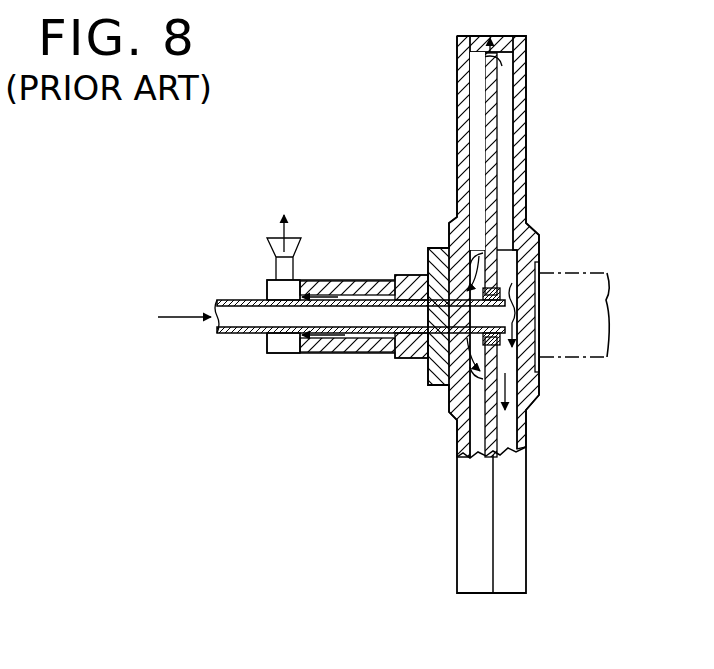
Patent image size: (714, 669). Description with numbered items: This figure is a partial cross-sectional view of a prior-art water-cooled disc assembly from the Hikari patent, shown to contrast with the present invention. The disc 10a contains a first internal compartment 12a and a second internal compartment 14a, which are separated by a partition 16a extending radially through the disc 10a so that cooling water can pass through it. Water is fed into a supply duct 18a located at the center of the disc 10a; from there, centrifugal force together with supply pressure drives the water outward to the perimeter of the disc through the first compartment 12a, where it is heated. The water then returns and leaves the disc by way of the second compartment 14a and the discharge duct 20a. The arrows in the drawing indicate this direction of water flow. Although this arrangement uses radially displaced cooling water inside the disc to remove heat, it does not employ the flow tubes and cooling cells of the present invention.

The disc 10a is at (513, 523).
The first internal compartment 12a is at (502, 135).
The second internal compartment 14a is at (480, 182).
The partition 16a is at (518, 425).
The supply duct 18a is at (360, 280).
The discharge duct 20a is at (245, 316).